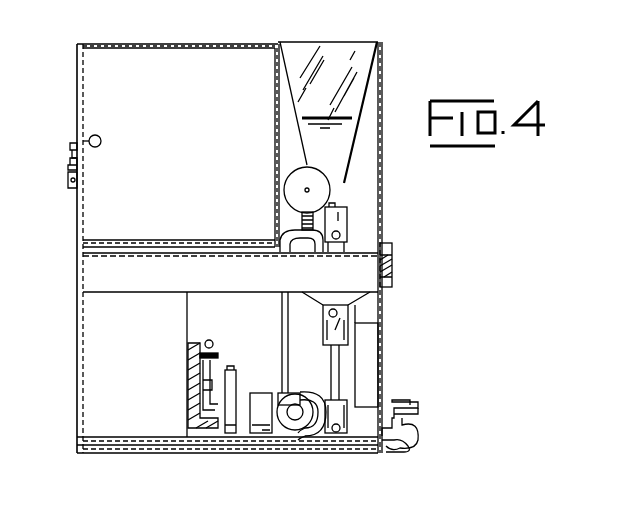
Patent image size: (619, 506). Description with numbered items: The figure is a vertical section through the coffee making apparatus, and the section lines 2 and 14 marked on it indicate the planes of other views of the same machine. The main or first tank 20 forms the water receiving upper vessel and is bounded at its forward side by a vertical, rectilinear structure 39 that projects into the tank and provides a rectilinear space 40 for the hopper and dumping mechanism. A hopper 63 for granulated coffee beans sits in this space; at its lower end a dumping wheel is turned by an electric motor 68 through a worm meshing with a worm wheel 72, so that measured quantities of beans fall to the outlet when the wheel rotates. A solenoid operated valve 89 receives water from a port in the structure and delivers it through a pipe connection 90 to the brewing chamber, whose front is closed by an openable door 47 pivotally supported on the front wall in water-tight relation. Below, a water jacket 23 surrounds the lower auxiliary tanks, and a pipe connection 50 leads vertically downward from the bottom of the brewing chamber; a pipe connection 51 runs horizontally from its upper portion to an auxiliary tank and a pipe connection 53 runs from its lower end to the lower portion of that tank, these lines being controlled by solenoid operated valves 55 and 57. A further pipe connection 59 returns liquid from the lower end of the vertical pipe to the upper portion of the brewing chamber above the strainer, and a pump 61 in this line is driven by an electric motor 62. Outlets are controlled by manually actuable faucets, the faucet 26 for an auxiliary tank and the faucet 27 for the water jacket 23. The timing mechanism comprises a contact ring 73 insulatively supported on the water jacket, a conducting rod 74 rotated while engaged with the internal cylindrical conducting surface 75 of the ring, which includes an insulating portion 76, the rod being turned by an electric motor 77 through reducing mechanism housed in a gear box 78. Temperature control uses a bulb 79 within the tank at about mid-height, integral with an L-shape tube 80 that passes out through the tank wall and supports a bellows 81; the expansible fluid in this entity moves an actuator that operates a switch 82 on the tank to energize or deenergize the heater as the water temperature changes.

The section line 2- 2 is at (369, 23).
The section line 14- 14 is at (216, 330).
The main or first tank 20 is at (77, 93).
The water jacket 23 is at (134, 456).
The faucet 26 is at (420, 426).
The faucet 27 is at (418, 445).
The vertical rectilinear structure 39 is at (383, 180).
The rectilinear space 40 is at (375, 118).
The openable door 47 is at (395, 251).
The pipe connection 50 is at (331, 356).
The pipe connection 51 is at (345, 313).
The pipe connection 53 is at (340, 428).
The solenoid operated valve 55 is at (338, 326).
The solenoid operated valve 57 is at (348, 412).
The pipe connection 59 is at (282, 305).
The pump 61 is at (284, 425).
The electric motor 62 is at (318, 382).
The hopper 63 is at (365, 76).
The electric motor 68 is at (300, 186).
The worm wheel 72 is at (300, 222).
The contact ring 73 is at (190, 410).
The conducting rod 74 is at (205, 358).
The internal cylindrical conducting surface 75 is at (210, 385).
The insulating portion 76 is at (213, 345).
The electric motor 77 is at (264, 390).
The gear box 78 is at (233, 386).
The bulb 79 is at (101, 141).
The L-shape tube 80 is at (72, 152).
The bellows 81 is at (70, 166).
The switch 82 is at (68, 183).
The solenoid operated valve 89 is at (340, 215).
The pipe connection 90 is at (334, 244).